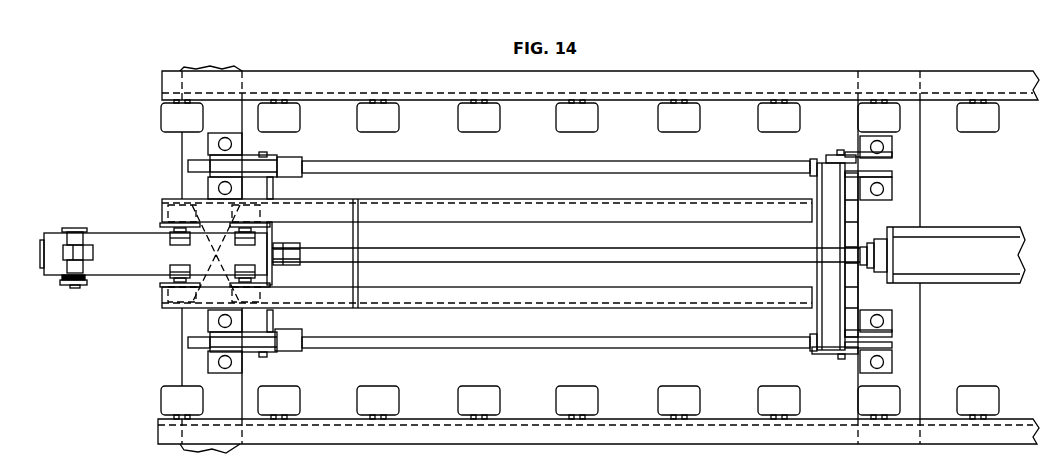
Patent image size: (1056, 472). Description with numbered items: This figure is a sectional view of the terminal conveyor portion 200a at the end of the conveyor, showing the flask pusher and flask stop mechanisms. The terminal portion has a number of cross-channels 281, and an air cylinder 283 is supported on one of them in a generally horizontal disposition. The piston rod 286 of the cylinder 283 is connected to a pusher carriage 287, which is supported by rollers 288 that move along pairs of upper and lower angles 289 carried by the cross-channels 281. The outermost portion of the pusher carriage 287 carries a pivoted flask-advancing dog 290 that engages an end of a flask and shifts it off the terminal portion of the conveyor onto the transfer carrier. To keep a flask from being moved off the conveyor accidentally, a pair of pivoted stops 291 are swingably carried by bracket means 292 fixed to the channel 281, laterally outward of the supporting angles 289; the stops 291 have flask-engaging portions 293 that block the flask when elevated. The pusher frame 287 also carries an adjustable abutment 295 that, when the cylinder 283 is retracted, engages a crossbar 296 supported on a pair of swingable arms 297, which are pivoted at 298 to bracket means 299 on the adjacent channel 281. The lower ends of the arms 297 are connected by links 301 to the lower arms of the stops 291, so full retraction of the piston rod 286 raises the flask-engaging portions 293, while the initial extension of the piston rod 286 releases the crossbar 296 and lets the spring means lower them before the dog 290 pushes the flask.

The terminal conveyor portion 200a is at (932, 73).
The cross-channels 281 is at (237, 105).
The air cylinder 283 is at (978, 229).
The piston rod 286 is at (753, 262).
The pusher carriage 287 is at (132, 276).
The rollers 288 is at (216, 254).
The upper and lower angles 289 is at (655, 293).
The flask-advancing dog 290 is at (88, 251).
The pivoted stops 291 is at (217, 161).
The bracket means 292 is at (248, 178).
The flask-engaging portions 293 is at (190, 164).
The adjustable abutment 295 is at (293, 256).
The crossbar 296 is at (818, 270).
The swingable arms 297 is at (855, 162).
The pivot 298 is at (840, 153).
The bracket means 299 is at (892, 185).
The links 301 is at (544, 165).